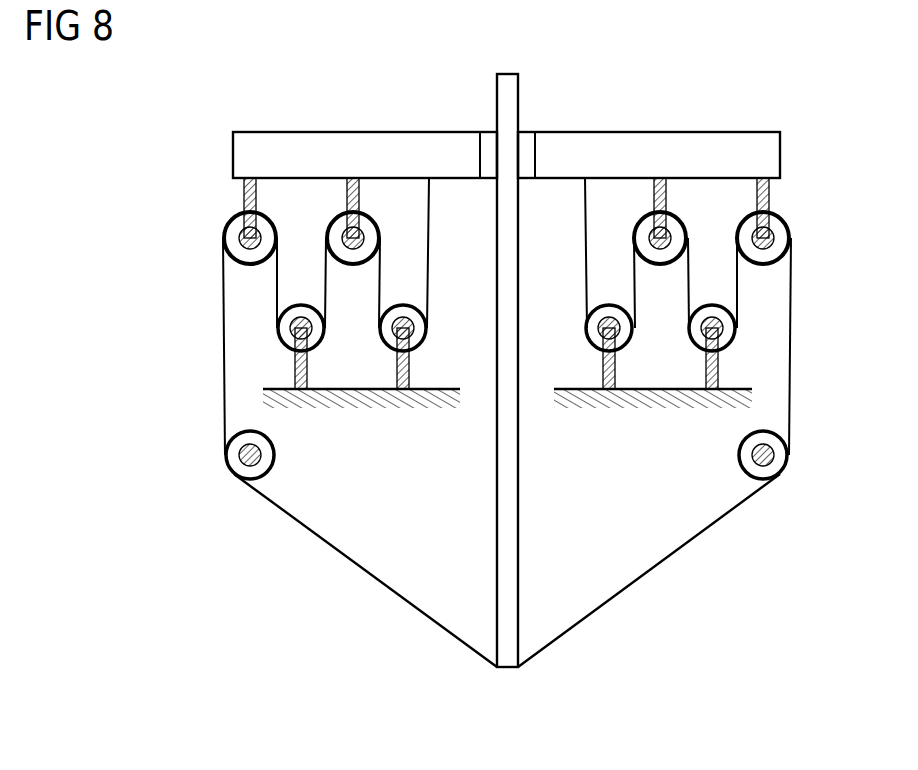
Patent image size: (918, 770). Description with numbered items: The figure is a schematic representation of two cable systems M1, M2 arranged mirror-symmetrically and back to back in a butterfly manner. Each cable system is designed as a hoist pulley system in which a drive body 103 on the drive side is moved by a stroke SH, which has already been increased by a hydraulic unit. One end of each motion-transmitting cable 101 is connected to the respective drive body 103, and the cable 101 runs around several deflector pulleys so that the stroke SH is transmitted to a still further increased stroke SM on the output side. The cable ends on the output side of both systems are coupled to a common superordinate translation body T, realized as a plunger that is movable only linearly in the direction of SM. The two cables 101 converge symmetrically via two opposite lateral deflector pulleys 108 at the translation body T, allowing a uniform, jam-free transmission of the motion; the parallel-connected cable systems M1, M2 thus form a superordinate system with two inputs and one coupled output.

The motion-transmitting cable 101 is at (223, 333).
The drive body 103 is at (318, 143).
The lateral deflector pulley 108 is at (276, 455).
The translation body T is at (510, 96).
The stroke SH is at (233, 132).
The increased stroke SM is at (497, 72).
The first cable system M1 is at (499, 673).
The second cable system M2 is at (792, 673).